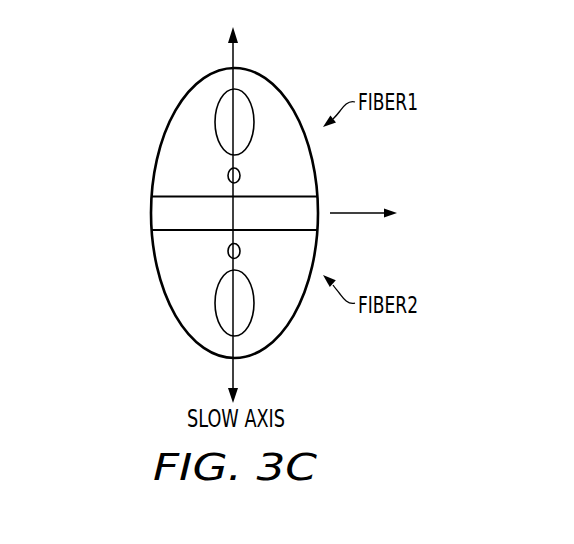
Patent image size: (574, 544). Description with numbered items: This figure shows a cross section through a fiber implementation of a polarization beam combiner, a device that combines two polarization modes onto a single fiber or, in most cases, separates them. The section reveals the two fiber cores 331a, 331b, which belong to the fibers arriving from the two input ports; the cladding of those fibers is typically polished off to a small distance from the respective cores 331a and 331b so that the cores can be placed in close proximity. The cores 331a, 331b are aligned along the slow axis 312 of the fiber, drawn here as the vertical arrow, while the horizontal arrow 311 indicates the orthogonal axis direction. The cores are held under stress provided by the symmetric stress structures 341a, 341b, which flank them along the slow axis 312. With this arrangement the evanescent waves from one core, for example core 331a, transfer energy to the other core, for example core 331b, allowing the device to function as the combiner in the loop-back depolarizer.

The fast axis 311 is at (362, 213).
The slow axis 312 is at (235, 376).
The core 331a is at (228, 176).
The core 331b is at (228, 253).
The symmetric stress structure 341a is at (216, 106).
The symmetric stress structure 341b is at (216, 322).